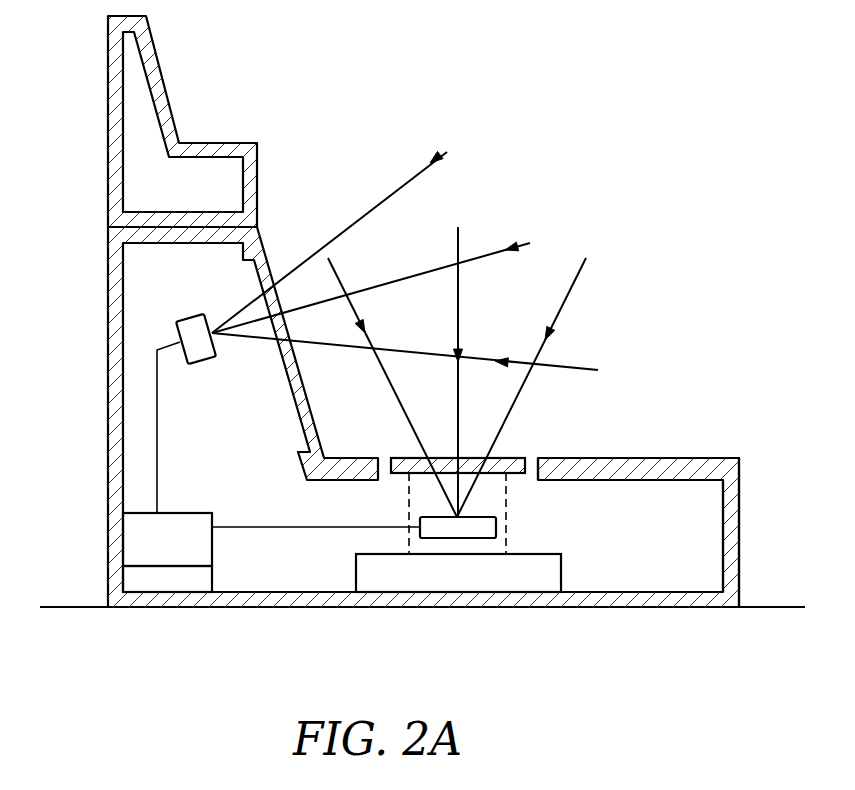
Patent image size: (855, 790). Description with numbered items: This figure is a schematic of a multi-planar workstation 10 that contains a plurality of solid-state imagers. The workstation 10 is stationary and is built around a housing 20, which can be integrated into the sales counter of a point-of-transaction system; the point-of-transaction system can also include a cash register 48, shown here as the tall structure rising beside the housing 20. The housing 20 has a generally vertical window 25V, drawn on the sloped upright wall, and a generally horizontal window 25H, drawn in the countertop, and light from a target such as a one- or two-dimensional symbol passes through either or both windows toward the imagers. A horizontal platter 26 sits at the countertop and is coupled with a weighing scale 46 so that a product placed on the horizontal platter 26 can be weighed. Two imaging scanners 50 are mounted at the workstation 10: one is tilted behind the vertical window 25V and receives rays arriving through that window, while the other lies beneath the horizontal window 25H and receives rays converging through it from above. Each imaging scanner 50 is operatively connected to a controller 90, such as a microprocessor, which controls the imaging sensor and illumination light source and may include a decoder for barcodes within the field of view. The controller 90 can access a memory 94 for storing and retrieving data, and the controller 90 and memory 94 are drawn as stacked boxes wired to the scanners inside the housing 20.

The workstation 10 is at (661, 397).
The housing 20 is at (710, 458).
The generally vertical window 25V is at (272, 266).
The generally horizontal window 25H is at (503, 458).
The horizontal platter 26 is at (412, 458).
The weighing scale 46 is at (365, 567).
The cash register 48 is at (108, 94).
The imaging scanner 50 is at (458, 538).
The controller 90 is at (135, 538).
The memory 94 is at (135, 583).